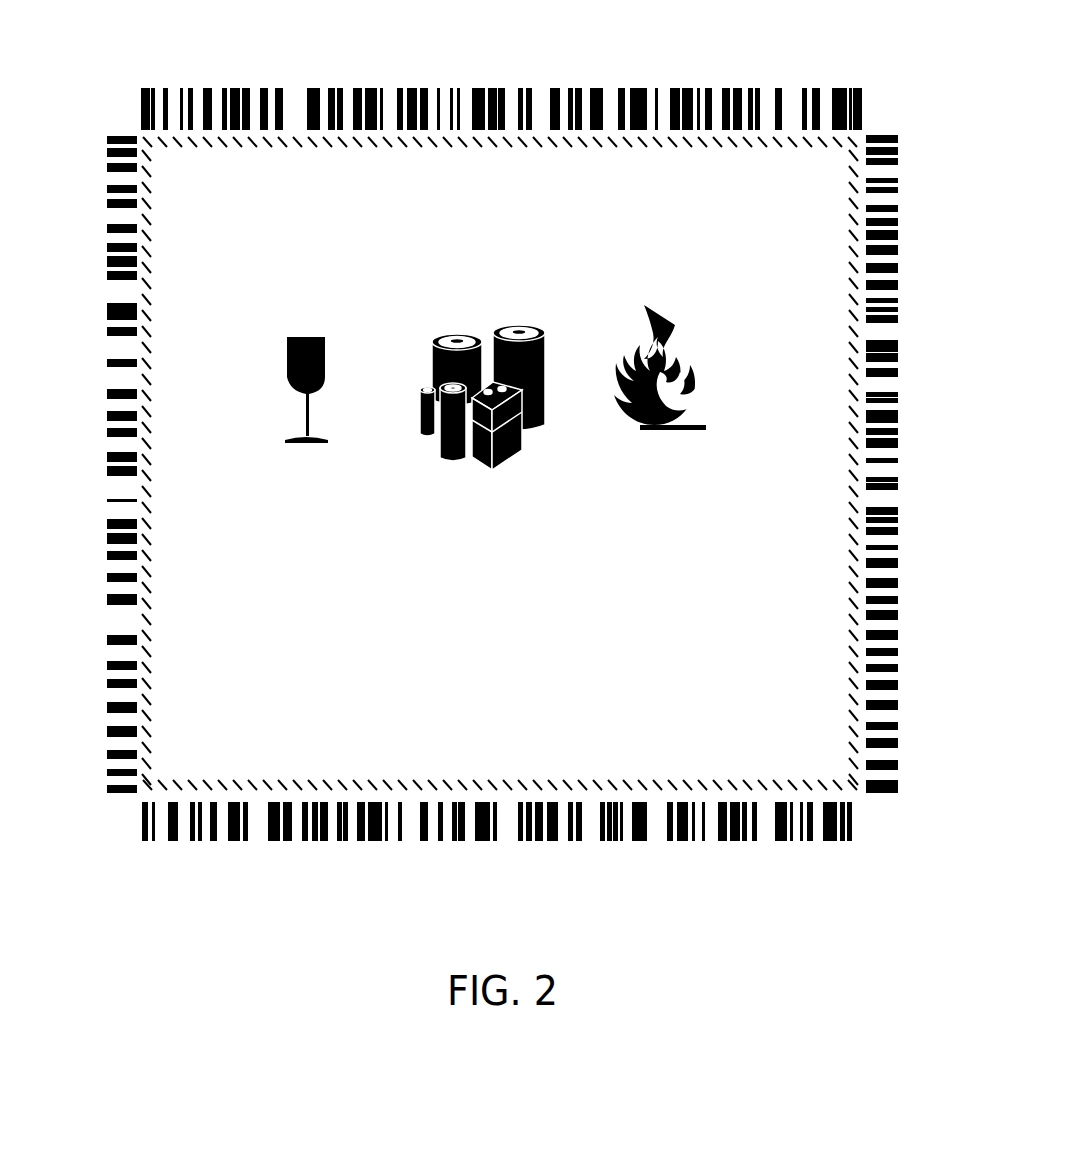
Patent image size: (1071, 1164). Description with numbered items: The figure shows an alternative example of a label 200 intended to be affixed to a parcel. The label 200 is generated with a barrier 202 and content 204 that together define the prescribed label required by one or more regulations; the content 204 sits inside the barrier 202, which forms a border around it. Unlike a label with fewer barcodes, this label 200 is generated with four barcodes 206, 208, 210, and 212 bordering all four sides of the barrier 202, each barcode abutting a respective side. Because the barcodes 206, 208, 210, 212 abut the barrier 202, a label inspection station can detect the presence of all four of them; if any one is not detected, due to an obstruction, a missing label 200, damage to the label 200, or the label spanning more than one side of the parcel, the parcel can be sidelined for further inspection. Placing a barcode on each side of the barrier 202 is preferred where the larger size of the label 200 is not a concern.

The label 200 is at (776, 22).
The barrier 202 is at (855, 262).
The content 204 is at (820, 418).
The barcode 206 is at (374, 88).
The barcode 208 is at (357, 838).
The barcode 210 is at (897, 520).
The barcode 212 is at (106, 258).